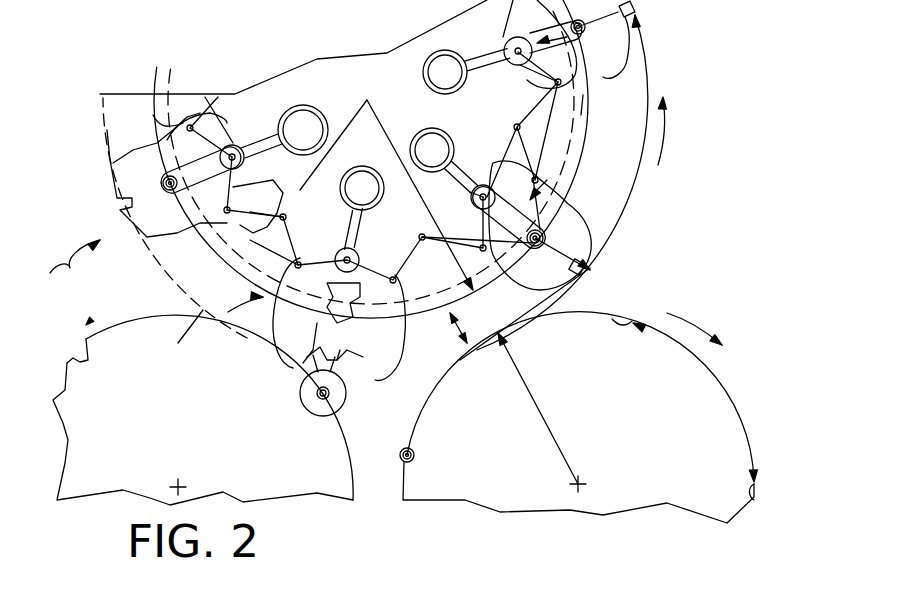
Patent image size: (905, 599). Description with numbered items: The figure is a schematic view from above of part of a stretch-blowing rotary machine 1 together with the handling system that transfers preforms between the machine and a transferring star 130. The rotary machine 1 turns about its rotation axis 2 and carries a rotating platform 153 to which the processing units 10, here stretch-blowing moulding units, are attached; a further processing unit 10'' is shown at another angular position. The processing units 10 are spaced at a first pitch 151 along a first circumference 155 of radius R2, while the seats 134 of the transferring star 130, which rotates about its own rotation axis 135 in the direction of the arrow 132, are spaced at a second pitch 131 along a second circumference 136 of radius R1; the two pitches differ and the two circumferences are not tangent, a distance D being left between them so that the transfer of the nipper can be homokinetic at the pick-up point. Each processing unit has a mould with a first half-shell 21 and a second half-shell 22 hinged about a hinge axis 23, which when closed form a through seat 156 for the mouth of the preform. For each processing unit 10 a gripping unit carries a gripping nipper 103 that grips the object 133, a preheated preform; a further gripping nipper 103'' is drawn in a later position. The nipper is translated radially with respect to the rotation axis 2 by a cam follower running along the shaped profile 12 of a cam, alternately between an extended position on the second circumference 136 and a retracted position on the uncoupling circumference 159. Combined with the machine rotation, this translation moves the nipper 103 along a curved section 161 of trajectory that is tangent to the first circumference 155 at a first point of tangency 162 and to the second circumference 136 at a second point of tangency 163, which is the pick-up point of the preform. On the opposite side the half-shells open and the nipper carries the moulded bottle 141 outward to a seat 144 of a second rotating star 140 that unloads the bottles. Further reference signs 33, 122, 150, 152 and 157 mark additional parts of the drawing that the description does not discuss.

The rotary machine 1 is at (68, 272).
The rotation axis 2 is at (367, 100).
The processing unit 10 is at (421, 178).
The transfer drum position 10'' is at (208, 335).
The shaped cam profile 12 is at (257, 200).
The first half-shell 21 is at (566, 281).
The second half-shell 22 is at (578, 230).
The hinge axis 23 is at (560, 106).
The gripper shaft 33 is at (458, 160).
The gripping nipper 103 is at (552, 222).
The gripper device in lower position 103'' is at (346, 339).
The gripper arm 122 is at (468, 210).
The transferring star 130 is at (708, 417).
The second pitch 131 is at (700, 362).
The arrow 132 is at (693, 317).
The object 133 is at (415, 452).
The seat 134 is at (618, 327).
The rotation axis of the transferring star 135 is at (583, 483).
The second circumference 136 is at (402, 492).
The second rotating star 140 is at (128, 345).
The moulded bottle 141 is at (333, 408).
The seat for bottles 144 is at (88, 362).
The gripper bar 150 is at (640, 43).
The first pitch 151 is at (648, 80).
The direction of rotation of drum 152 is at (665, 127).
The rotating platform 153 is at (270, 92).
The first circumference 155 is at (162, 122).
The through seat 156 is at (593, 265).
The frame 157 is at (107, 130).
The uncoupling circumference 159 is at (163, 78).
The curved section of trajectory 161 is at (472, 303).
The first point of tangency 162 is at (418, 262).
The second point of tangency 163 is at (498, 340).
The distance D is at (464, 328).
The radius of the second circumference R1 is at (538, 408).
The radius of the first circumference R2 is at (409, 195).